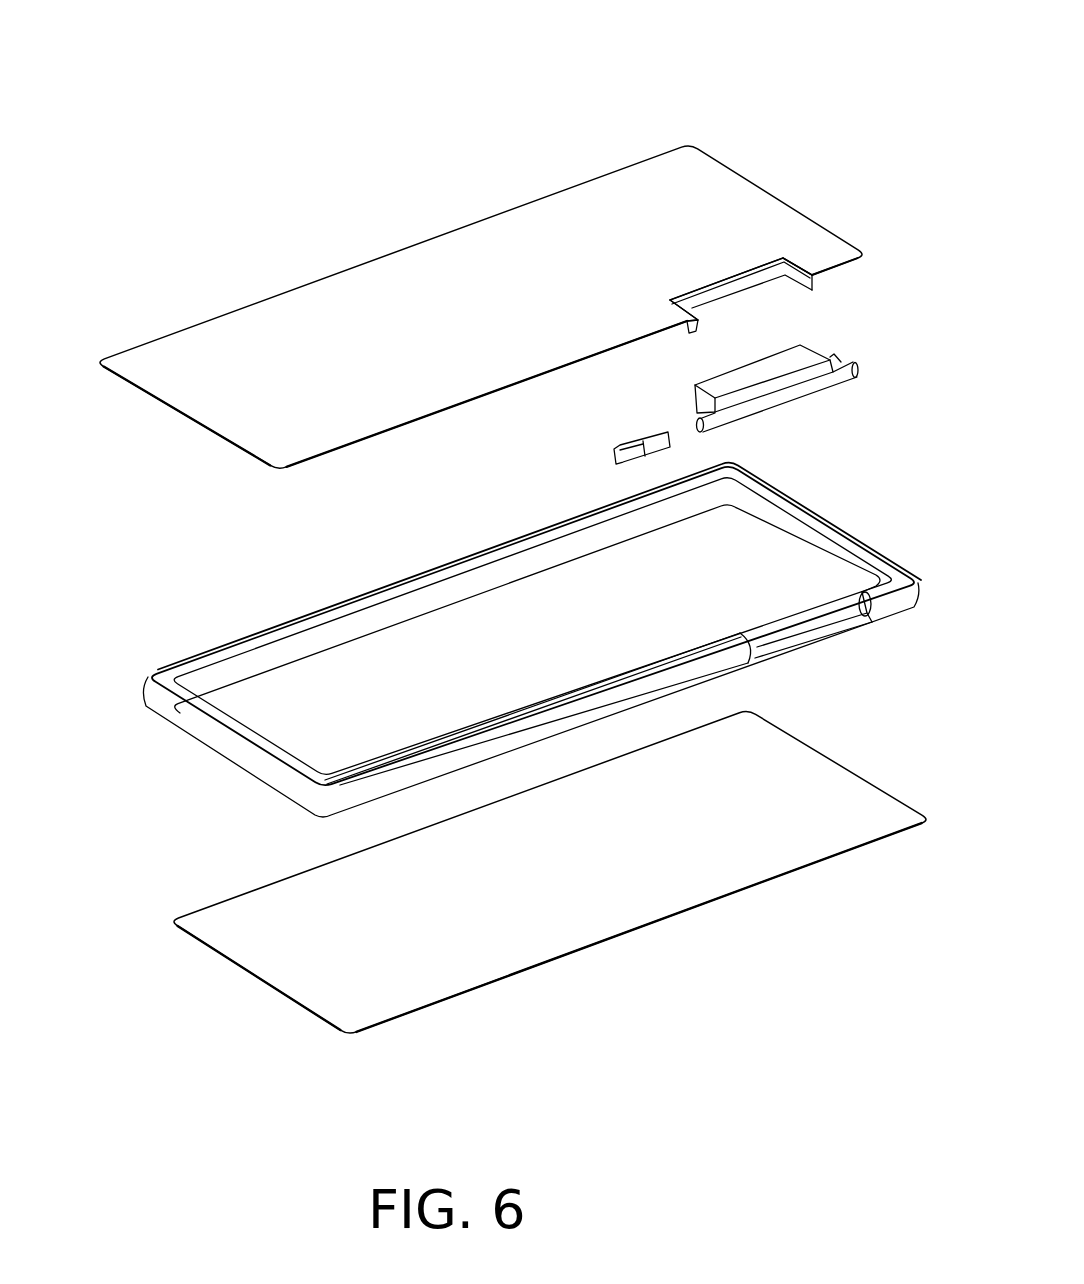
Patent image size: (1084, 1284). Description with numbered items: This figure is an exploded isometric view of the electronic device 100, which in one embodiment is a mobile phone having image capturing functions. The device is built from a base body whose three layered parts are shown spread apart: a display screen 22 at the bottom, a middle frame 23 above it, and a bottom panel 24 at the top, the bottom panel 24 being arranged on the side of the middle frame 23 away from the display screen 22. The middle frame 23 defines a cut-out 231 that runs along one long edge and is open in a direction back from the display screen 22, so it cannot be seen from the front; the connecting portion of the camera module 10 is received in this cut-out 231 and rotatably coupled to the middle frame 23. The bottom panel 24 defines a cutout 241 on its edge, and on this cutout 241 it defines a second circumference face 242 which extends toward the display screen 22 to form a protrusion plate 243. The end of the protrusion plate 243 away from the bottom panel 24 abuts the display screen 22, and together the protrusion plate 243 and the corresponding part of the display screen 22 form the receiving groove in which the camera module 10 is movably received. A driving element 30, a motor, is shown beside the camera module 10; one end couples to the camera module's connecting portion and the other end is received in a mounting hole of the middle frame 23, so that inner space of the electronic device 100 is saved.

The electronic device 100 is at (437, 64).
The bottom panel 24 is at (495, 307).
The cutout 241 is at (784, 258).
The second circumference face 242 is at (804, 270).
The protrusion plate 243 is at (748, 287).
The camera module 10 is at (793, 377).
The driving element 30 is at (615, 448).
The middle frame 23 is at (534, 640).
The cut-out 231 is at (810, 628).
The display screen 22 is at (225, 915).